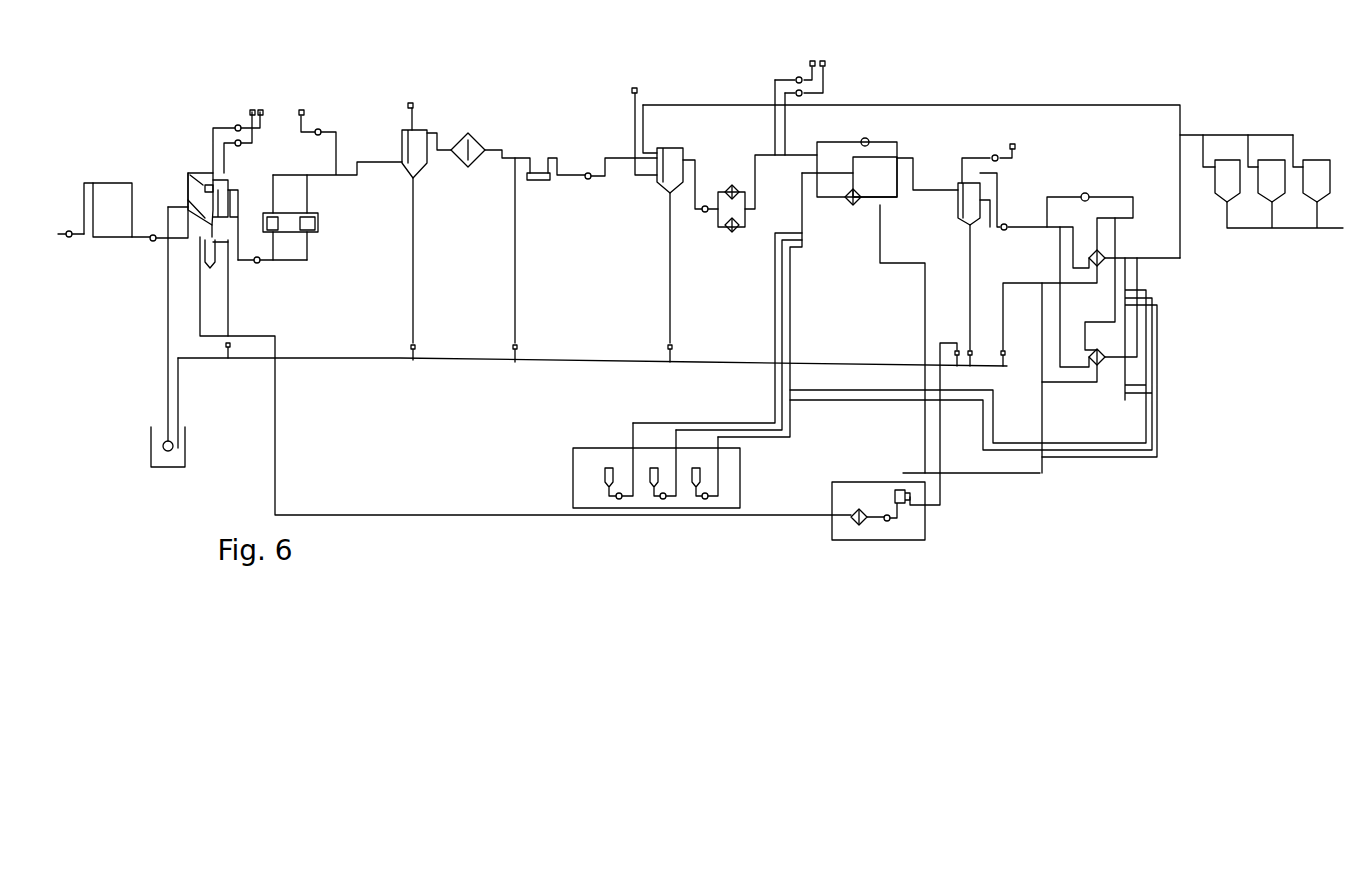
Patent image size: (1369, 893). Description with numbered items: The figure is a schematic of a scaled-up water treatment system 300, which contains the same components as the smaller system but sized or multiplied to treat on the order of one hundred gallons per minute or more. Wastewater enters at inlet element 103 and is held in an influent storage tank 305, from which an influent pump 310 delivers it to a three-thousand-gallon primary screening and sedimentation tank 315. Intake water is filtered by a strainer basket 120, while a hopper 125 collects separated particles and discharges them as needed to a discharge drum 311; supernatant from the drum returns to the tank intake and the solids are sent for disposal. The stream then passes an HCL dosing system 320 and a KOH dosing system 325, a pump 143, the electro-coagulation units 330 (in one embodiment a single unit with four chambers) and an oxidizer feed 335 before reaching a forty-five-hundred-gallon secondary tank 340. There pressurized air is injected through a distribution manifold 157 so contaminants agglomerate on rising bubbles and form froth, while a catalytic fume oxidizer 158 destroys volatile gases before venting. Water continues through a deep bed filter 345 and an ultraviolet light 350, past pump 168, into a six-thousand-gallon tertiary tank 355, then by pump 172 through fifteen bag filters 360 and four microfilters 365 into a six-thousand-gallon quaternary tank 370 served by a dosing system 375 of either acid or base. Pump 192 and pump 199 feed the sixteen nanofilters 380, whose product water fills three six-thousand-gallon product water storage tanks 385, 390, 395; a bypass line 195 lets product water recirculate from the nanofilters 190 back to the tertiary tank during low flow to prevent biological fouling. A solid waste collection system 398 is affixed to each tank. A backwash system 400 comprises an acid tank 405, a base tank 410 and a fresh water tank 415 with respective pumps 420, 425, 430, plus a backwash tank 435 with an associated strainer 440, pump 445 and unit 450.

The feed inlet valve 103 is at (69, 246).
The influent storage tank 305 is at (112, 200).
The influent pump 310 is at (150, 249).
The strainer basket 120 is at (190, 174).
The primary screening and sedimentation tank 315 is at (207, 184).
The hopper 125 is at (203, 217).
The discharge drum 311 is at (206, 259).
The KOH dosing system 325 is at (258, 110).
The HCL dosing system 320 is at (250, 110).
The oxidizer feed 335 is at (303, 110).
The electro-coagulation units 330 is at (275, 228).
The pump 143 is at (257, 273).
The catalytic fume oxidizer 158 is at (412, 103).
The secondary tank 340 is at (405, 170).
The deep bed filter 345 is at (468, 139).
The ultraviolet light 350 is at (540, 190).
The pump 168 is at (582, 190).
The water treatment system 300 is at (584, 124).
The distribution manifold 157 is at (638, 90).
The tertiary tank 355 is at (672, 157).
The pump 172 is at (707, 206).
The bag filters 360 is at (732, 208).
The bypass line 195 is at (911, 172).
The nanofilters 190 is at (857, 157).
The microfilter 365 is at (848, 210).
The quaternary tank 370 is at (962, 219).
The dosing system 375 is at (1016, 145).
The pump 199 is at (1085, 185).
The pump 192 is at (1006, 240).
The nanofilters 380 is at (1117, 298).
The product water storage tank 385 is at (1227, 171).
The product water storage tank 390 is at (1272, 171).
The product water storage tank 395 is at (1317, 171).
The solid waste collection system 398 is at (592, 355).
The backwash system 400 is at (950, 367).
The acid tank 405 is at (747, 491).
The base tank 410 is at (599, 473).
The pump 420 is at (657, 473).
The pump 430 is at (700, 473).
The fresh water tank 415 is at (621, 499).
The pump 425 is at (665, 499).
The backwash tank 435 is at (707, 499).
The strainer 440 is at (878, 500).
The filter 450 is at (857, 525).
The pump 445 is at (888, 522).